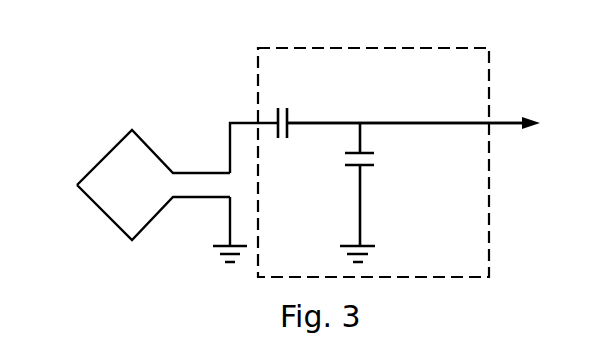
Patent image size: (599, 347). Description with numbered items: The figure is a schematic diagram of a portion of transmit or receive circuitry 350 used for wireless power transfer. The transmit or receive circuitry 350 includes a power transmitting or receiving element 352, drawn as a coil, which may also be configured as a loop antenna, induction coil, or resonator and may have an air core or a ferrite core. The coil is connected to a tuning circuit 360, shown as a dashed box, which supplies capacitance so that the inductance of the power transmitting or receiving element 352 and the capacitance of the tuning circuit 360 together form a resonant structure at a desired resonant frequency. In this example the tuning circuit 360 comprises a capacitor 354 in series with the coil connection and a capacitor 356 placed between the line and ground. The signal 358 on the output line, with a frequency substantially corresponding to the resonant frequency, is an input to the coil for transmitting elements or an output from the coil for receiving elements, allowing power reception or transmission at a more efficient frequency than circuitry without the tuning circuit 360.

The transmit or receive circuitry 350 is at (153, 101).
The power transmitting or receiving element 352 is at (107, 157).
The capacitor 354 is at (289, 113).
The capacitor 356 is at (362, 168).
The signal 358 is at (393, 121).
The tuning circuit 360 is at (474, 47).